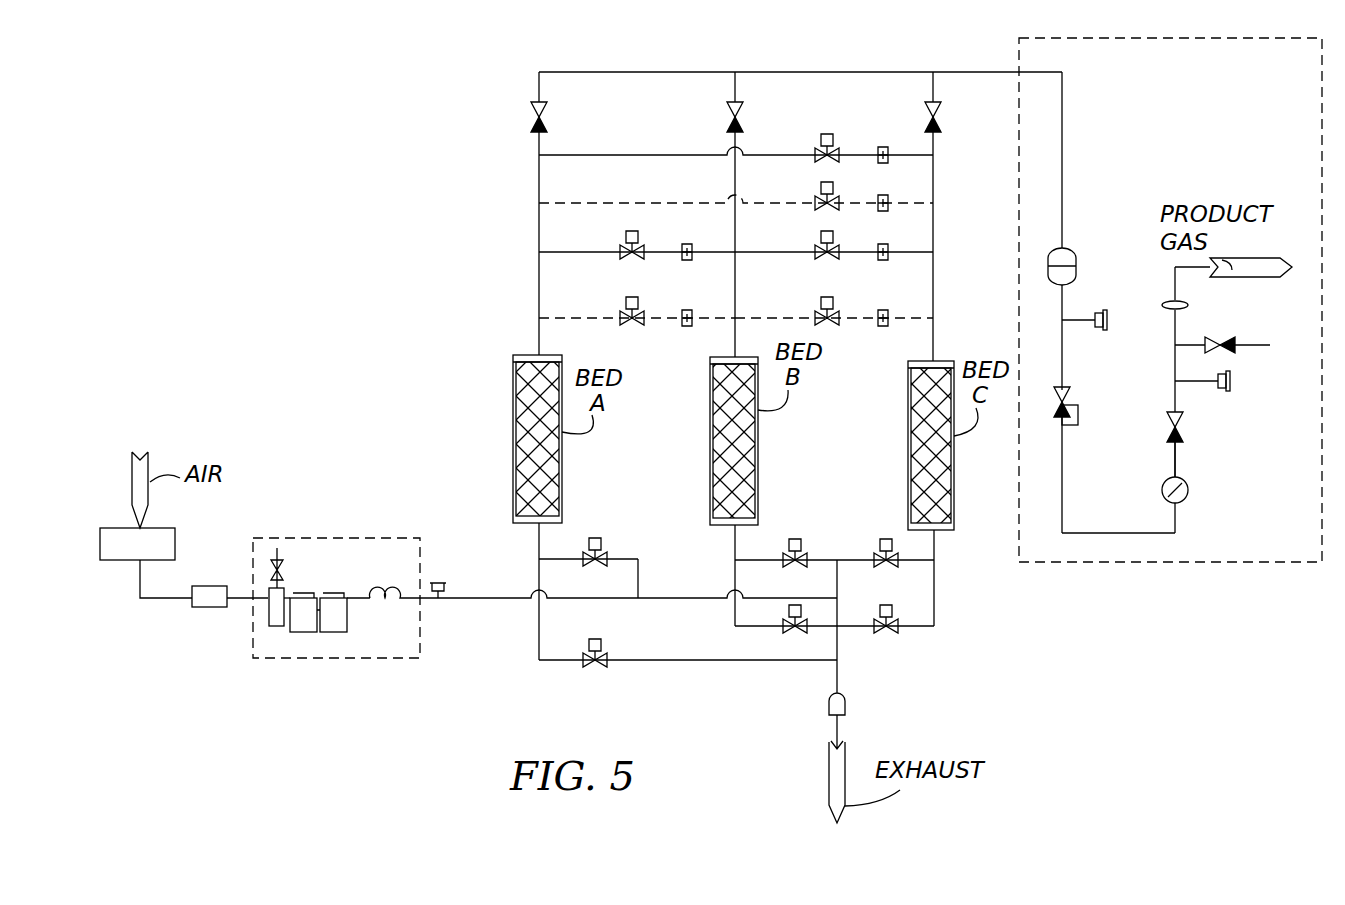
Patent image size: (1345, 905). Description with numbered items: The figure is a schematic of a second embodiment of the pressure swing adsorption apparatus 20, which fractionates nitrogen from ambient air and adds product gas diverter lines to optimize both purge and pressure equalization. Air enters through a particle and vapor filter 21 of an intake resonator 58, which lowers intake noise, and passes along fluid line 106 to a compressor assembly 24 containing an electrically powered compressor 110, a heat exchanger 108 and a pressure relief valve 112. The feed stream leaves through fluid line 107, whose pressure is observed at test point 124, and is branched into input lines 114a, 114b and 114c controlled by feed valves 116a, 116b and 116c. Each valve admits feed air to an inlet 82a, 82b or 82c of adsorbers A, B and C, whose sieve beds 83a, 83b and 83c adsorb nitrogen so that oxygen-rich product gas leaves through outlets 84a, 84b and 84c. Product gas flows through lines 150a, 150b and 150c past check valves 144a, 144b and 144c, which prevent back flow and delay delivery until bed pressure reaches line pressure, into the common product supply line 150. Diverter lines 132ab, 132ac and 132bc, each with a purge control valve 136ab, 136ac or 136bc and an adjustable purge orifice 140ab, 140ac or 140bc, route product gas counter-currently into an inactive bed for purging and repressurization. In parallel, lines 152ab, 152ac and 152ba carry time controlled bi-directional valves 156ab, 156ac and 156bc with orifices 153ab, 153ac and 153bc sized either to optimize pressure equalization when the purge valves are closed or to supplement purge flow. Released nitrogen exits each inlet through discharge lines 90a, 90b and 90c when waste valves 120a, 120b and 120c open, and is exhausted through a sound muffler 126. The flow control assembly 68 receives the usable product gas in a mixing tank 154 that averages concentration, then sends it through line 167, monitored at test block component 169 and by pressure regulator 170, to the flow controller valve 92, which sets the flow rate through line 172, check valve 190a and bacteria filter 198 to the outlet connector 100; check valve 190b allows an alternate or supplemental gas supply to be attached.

The pressure swing adsorption apparatus 20 is at (282, 212).
The particle and vapor filter 21 is at (100, 535).
The compressor assembly 24 is at (355, 660).
The intake resonator 58 is at (210, 608).
The flow control assembly 68 is at (1245, 566).
The inlet of first adsorber A 82a is at (535, 532).
The inlet of adsorber B 82b is at (735, 532).
The inlet of adsorber C 82c is at (940, 542).
The sieve bed 83a is at (513, 434).
The sieve bed 83b is at (710, 428).
The sieve bed 83c is at (910, 440).
The outlet of first adsorber A 84a is at (520, 358).
The outlet of adsorber B 84b is at (713, 360).
The outlet of adsorber C 84c is at (940, 366).
The discharge line 90a is at (537, 645).
The discharge line 90b is at (733, 622).
The discharge line 90c is at (938, 624).
The flow controller valve 92 is at (1188, 494).
The outlet connector 100 is at (1240, 260).
The fluid line 106 is at (243, 596).
The fluid line 107 is at (503, 600).
The heat exchanger 108 is at (395, 592).
The electrically powered compressor 110 is at (342, 612).
The pressure relief valve 112 is at (279, 560).
The input line 114a is at (642, 585).
The input line 114b is at (837, 560).
The input line 114c is at (850, 566).
The feed valve 116a is at (590, 548).
The feed valve 116b is at (790, 548).
The feed valve 116c is at (900, 565).
The waste valve 120a is at (602, 652).
The discharge valve 120b is at (797, 636).
The waste valve 120c is at (888, 636).
The test point 124 is at (438, 578).
The sound muffler 126 is at (845, 702).
The diverter line 132ab is at (550, 252).
The diverter line 132ac is at (652, 158).
The diverter line 132bc is at (918, 252).
The purge control valve 136ab is at (622, 250).
The purge control valve 136ac is at (816, 152).
The purge control valve 136bc is at (816, 250).
The purge orifice 140ab is at (705, 238).
The purge orifice 140ac is at (912, 146).
The purge orifice 140bc is at (892, 250).
The check valve 144a is at (531, 117).
The check valve 144b is at (727, 117).
The check valve 144c is at (941, 124).
The common product supply line 150 is at (603, 70).
The product gas line 150a is at (539, 76).
The product gas line 150b is at (735, 88).
The product gas line 150c is at (942, 82).
The parallel diverter line 152ab is at (539, 312).
The parallel diverter line 152ac is at (539, 207).
The parallel diverter line 152ba is at (922, 318).
The orifice 153ab is at (710, 288).
The orifice 153ac is at (876, 196).
The orifice 153bc is at (883, 328).
The mixing tank 154 is at (1068, 250).
The time controlled bi-directional valve 156ab is at (620, 316).
The time controlled bi-directional valve 156ac is at (816, 200).
The time controlled bi-directional valve 156bc is at (816, 316).
The line 167 is at (1140, 532).
The test block component 169 is at (1100, 312).
The pressure regulator 170 is at (1067, 400).
The line 172 is at (1178, 460).
The check valve 190a is at (1182, 428).
The check valve 190b is at (1226, 356).
The bacteria filter 198 is at (1190, 305).